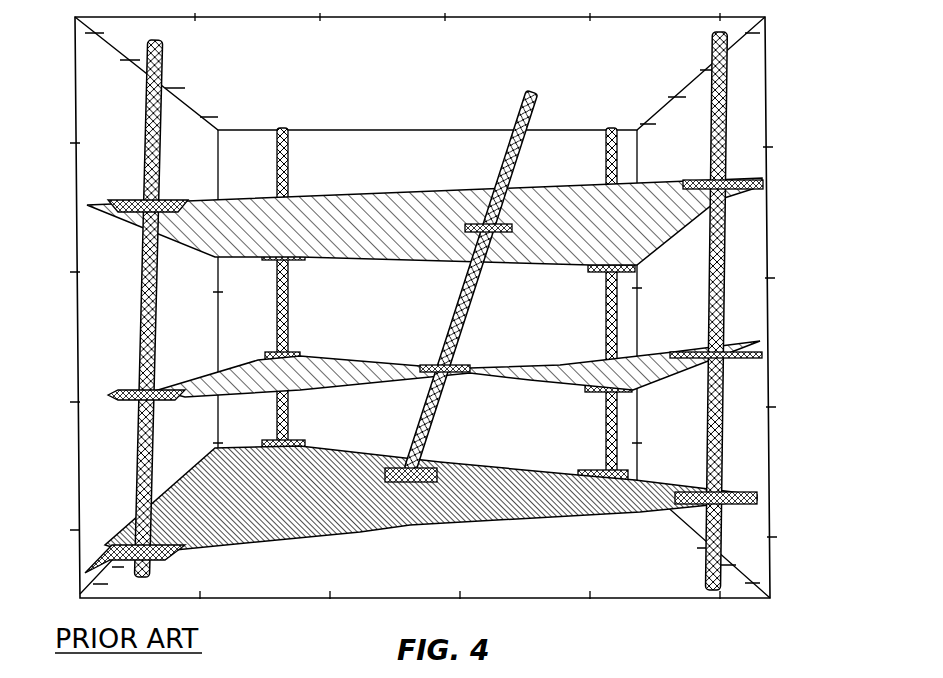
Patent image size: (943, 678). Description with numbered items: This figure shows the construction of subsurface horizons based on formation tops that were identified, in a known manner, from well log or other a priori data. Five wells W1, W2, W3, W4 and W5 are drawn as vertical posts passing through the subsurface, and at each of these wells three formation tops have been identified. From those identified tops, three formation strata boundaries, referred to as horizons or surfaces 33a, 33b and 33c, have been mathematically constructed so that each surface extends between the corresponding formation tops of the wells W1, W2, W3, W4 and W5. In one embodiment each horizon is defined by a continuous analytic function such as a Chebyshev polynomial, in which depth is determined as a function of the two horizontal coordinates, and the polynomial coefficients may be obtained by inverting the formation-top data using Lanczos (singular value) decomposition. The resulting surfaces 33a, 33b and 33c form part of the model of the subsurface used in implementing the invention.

The well W1 is at (160, 332).
The well W2 is at (293, 288).
The well W3 is at (450, 327).
The well W4 is at (608, 318).
The well W5 is at (710, 297).
The surface 33a is at (400, 193).
The surface 33b is at (388, 352).
The surface 33c is at (462, 466).